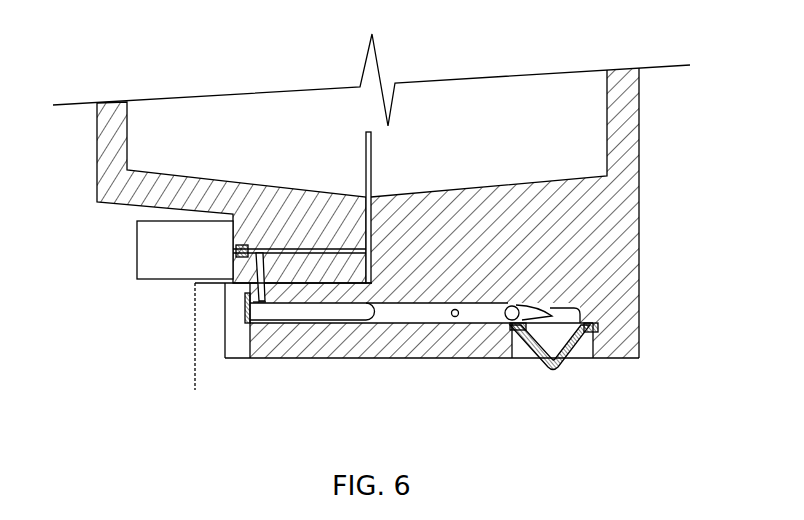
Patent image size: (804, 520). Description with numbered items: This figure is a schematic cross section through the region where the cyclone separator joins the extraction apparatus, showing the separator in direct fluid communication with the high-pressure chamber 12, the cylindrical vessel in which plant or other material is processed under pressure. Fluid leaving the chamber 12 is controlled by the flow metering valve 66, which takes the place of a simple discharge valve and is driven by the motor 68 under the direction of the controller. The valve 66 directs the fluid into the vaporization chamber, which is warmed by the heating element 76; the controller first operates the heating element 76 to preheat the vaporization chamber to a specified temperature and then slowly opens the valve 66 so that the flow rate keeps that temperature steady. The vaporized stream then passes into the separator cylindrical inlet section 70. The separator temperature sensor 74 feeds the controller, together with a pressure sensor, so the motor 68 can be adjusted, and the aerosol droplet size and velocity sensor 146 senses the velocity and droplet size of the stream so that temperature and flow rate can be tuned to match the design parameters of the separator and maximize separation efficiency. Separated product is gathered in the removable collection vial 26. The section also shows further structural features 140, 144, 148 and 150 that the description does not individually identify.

The high-pressure chamber 12 is at (495, 213).
The removable collection vial 26 is at (582, 373).
The flow metering valve 66 is at (190, 208).
The motor 68 is at (136, 250).
The separator cylindrical inlet section 70 is at (504, 296).
The separator temperature sensor 74 is at (497, 227).
The heating element 76 is at (238, 341).
The vertical plate 140 is at (276, 152).
The sloped wall 144 is at (231, 175).
The aerosol droplet size and velocity sensor 146 is at (462, 362).
The fastener 148 is at (681, 350).
The hook tip 150 is at (645, 242).